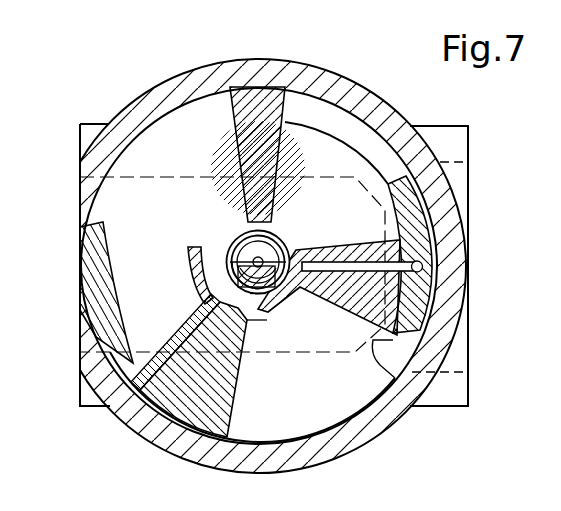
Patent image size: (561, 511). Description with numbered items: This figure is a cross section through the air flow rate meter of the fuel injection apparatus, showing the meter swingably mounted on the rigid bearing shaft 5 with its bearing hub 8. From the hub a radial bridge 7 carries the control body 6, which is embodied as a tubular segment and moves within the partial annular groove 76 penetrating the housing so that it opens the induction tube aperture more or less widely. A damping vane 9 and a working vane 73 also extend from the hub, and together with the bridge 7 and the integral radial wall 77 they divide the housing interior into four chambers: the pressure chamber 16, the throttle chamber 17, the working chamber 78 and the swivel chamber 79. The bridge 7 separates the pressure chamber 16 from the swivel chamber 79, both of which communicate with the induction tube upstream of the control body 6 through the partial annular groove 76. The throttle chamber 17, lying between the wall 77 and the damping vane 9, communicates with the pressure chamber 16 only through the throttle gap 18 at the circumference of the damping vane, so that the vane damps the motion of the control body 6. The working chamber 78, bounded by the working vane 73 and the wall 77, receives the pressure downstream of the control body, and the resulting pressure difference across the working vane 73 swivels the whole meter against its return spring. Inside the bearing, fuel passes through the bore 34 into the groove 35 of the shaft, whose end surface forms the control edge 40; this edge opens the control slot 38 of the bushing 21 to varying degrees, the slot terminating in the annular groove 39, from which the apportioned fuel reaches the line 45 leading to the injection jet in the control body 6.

The bearing shaft 5 is at (288, 295).
The control body 6 is at (407, 203).
The bridge 7 is at (347, 295).
The bearing hub 8 is at (285, 306).
The damping vane 9 is at (160, 402).
The pressure chamber 16 is at (393, 425).
The throttle chamber 17 is at (118, 400).
The throttle gap 18 is at (170, 432).
The bushing 21 is at (240, 254).
The bore 34 is at (254, 257).
The groove 35 is at (232, 250).
The control slot 38 is at (261, 300).
The annular groove 39 is at (282, 226).
The control edge 40 is at (304, 256).
The line 45 is at (358, 267).
The working vane 73 is at (252, 141).
The partial annular groove 76 is at (370, 143).
The radial wall 77 is at (168, 342).
The working chamber 78 is at (157, 133).
The swivel chamber 79 is at (325, 157).